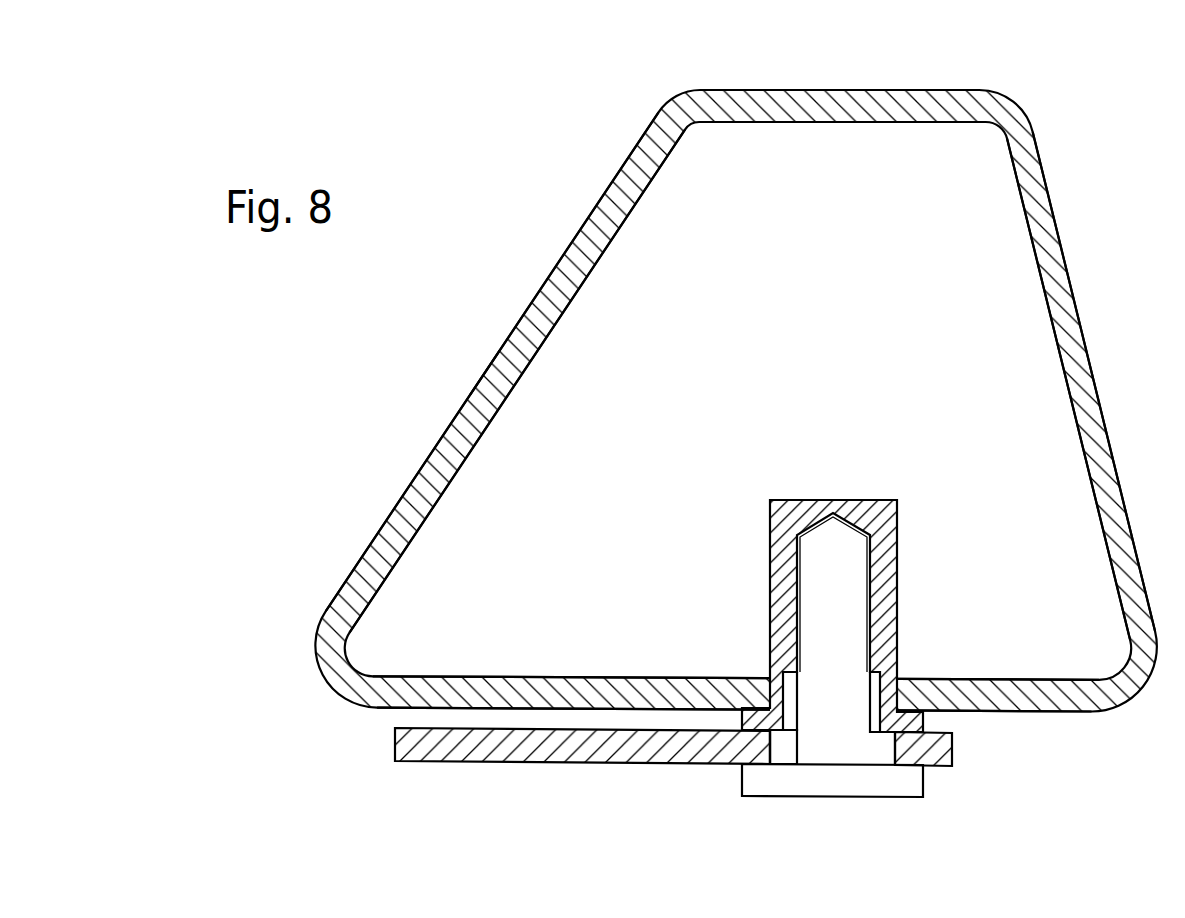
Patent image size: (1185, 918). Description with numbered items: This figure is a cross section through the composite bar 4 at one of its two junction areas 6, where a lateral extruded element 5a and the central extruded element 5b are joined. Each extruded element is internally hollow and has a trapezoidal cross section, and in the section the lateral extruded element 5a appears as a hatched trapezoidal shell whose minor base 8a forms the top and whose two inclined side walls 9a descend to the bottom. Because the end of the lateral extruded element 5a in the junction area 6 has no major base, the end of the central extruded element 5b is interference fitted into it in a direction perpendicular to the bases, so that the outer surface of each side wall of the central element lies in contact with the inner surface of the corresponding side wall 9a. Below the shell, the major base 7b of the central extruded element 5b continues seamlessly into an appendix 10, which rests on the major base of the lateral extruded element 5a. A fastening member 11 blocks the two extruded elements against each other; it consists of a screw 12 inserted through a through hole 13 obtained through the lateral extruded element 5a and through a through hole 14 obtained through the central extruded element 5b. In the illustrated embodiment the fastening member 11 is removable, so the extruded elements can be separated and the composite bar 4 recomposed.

The composite bar 4 is at (430, 142).
The lateral extruded element 5a is at (1092, 156).
The central extruded element 5b is at (313, 755).
The junction area 6 is at (276, 362).
The major base of the central extruded element 7b is at (621, 690).
The minor base of the lateral extruded element 8a is at (843, 106).
The side wall of the lateral extruded element 9a is at (492, 382).
The appendix 10 is at (982, 755).
The fastening member 11 is at (878, 445).
The screw 12 is at (832, 783).
The through hole of the lateral extruded element 13 is at (797, 505).
The through hole of the central extruded element 14 is at (783, 747).